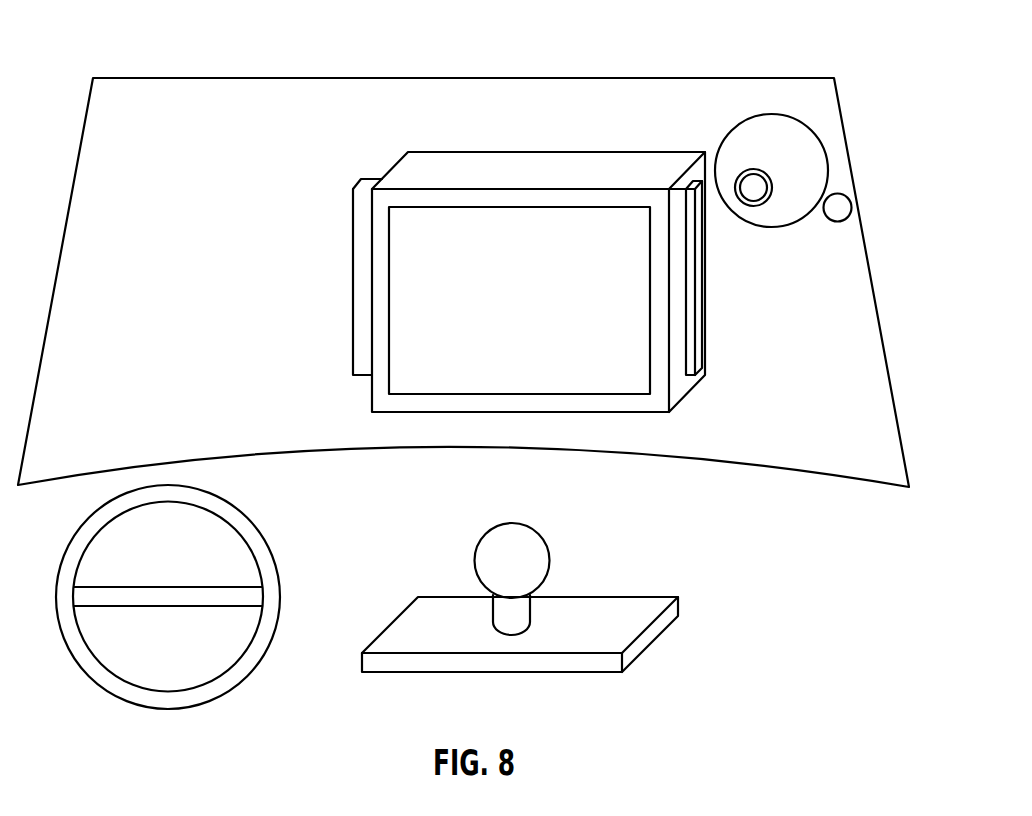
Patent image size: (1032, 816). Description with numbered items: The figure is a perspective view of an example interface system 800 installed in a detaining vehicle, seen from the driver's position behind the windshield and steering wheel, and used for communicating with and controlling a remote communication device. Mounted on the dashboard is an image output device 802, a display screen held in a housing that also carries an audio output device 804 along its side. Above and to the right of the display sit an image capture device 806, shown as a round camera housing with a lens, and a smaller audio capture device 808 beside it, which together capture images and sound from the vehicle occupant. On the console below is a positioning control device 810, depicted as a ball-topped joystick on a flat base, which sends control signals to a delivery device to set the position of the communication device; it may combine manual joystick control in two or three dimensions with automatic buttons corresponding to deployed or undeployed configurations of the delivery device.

The interface system 800 is at (693, 55).
The image output device 802 is at (536, 314).
The audio output device 804 is at (680, 263).
The image capture device 806 is at (822, 172).
The audio capture device 808 is at (838, 207).
The positioning control device 810 is at (515, 560).